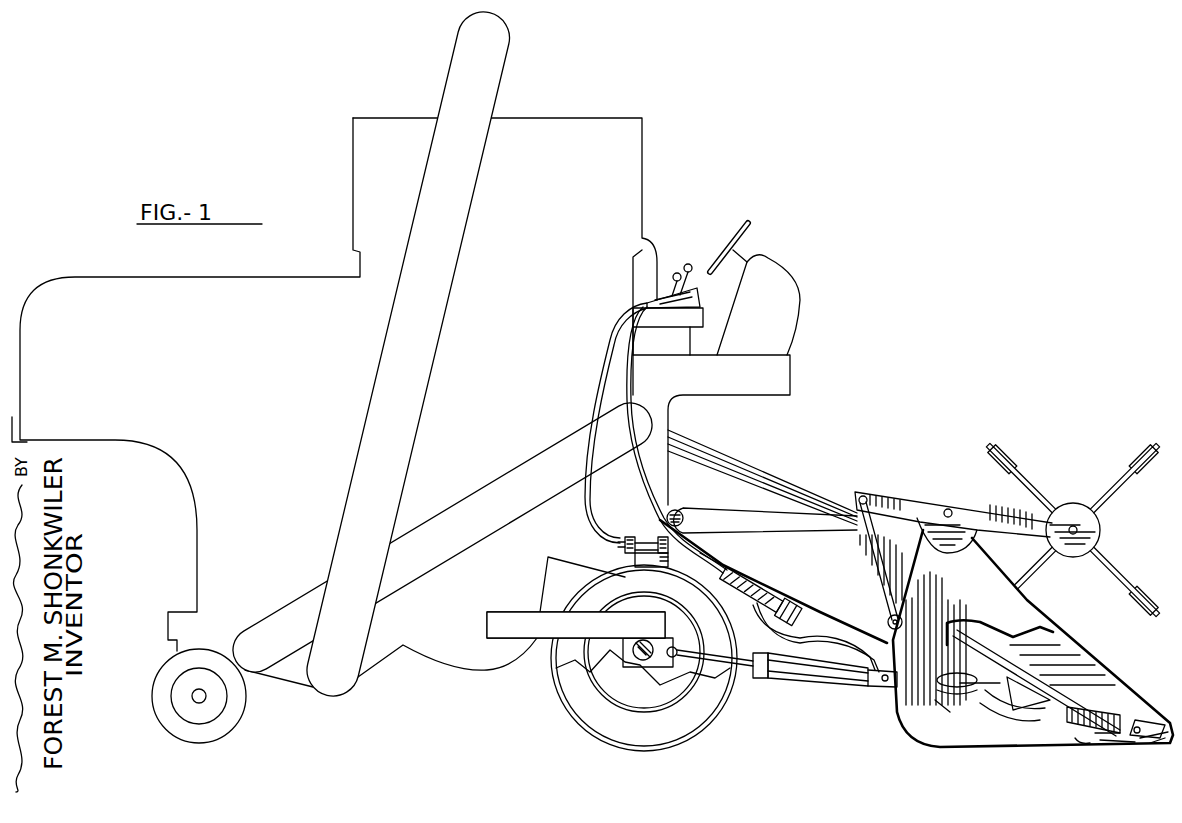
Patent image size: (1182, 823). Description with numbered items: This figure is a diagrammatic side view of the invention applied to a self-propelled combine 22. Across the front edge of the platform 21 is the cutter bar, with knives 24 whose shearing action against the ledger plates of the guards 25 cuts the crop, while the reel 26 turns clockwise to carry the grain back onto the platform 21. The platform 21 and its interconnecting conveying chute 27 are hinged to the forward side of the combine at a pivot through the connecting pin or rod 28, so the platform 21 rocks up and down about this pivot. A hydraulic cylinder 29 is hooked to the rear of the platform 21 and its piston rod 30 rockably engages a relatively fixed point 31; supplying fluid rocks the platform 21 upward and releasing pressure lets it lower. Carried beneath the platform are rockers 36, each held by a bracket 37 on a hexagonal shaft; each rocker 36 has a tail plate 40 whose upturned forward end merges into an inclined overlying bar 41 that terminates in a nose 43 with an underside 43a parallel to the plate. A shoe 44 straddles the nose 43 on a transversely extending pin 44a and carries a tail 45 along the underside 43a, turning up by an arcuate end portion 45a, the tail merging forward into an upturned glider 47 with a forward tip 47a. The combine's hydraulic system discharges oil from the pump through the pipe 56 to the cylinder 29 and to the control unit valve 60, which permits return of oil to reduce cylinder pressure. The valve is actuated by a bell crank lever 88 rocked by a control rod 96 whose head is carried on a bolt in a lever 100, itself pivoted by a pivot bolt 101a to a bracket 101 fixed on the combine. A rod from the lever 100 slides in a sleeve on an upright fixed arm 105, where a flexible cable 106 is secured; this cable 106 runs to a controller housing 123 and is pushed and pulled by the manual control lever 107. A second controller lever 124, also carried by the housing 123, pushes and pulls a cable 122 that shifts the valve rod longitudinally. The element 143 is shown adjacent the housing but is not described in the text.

The combine 22 is at (622, 130).
The second controller lever 124 is at (675, 274).
The manual control lever 107 is at (690, 265).
The housing 123 is at (698, 296).
The valve mounting bracket 143 is at (703, 316).
The flexible cable 106 is at (607, 362).
The cable 122 is at (627, 382).
The connecting pin or rod 28 is at (681, 512).
The conveying chute 27 is at (758, 533).
The reel 26 is at (1118, 485).
The platform 21 is at (1020, 608).
The rocker 36 is at (999, 638).
The knife 24 is at (957, 672).
The guard 25 is at (996, 687).
The bracket 37 is at (944, 713).
The tail plate 40 is at (1023, 719).
The overlying bar 41 is at (1043, 693).
The nose 43 is at (1101, 718).
The underside of the nose 43a is at (1098, 736).
The shoe 44 is at (1160, 707).
The transversely extending pin 44a is at (1134, 726).
The tail 45 is at (1111, 745).
The arcuate end portion 45a is at (1080, 746).
The glider 47 is at (1158, 738).
The forward tip 47a is at (1166, 746).
The lever 100 is at (658, 542).
The upright fixed arm 105 is at (625, 554).
The bracket 101 is at (650, 564).
The pivot bolt 101a is at (668, 568).
The control rod 96 is at (731, 567).
The bell crank lever 88 is at (756, 578).
The control unit valve 60 is at (779, 594).
The pipe 56 is at (838, 630).
The relatively fixed point 31 is at (684, 632).
The piston rod 30 is at (730, 676).
The hydraulic cylinder 29 is at (818, 670).